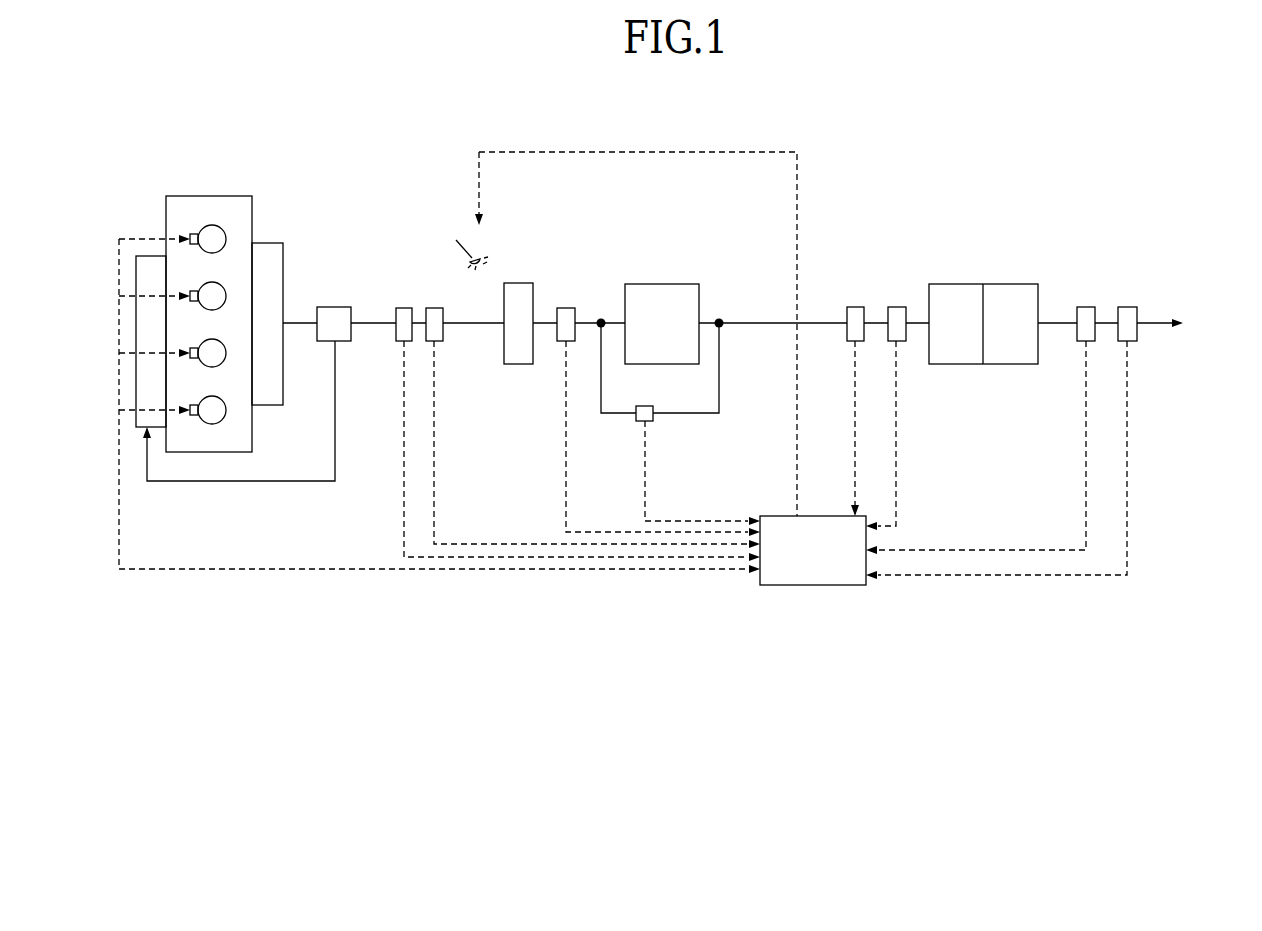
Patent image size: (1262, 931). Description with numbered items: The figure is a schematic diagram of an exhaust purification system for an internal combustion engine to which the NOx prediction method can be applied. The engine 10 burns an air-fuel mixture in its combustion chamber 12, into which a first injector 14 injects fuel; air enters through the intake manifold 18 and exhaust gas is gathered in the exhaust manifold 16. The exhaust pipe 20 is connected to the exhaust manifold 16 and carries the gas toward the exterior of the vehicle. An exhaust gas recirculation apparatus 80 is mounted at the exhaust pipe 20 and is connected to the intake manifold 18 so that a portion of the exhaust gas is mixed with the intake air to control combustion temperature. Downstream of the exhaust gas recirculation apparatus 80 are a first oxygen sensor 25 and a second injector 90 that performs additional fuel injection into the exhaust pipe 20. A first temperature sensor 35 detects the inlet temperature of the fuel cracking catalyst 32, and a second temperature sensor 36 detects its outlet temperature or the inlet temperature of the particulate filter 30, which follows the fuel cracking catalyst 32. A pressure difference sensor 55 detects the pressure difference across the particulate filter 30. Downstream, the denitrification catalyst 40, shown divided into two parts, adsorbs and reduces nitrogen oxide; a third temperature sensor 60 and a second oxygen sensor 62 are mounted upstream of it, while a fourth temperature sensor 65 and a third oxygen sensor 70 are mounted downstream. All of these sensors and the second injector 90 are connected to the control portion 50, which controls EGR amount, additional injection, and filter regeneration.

The engine 10 is at (266, 168).
The combustion chamber 12 is at (214, 225).
The first injector 14 is at (189, 236).
The exhaust manifold 16 is at (273, 253).
The intake manifold 18 is at (136, 256).
The exhaust pipe 20 is at (366, 322).
The first oxygen sensor 25 is at (404, 307).
The particulate filter 30 is at (682, 240).
The fuel cracking catalyst 32 is at (521, 283).
The first temperature sensor 35 is at (434, 307).
The second temperature sensor 36 is at (567, 307).
The denitrification (DE-NOx) catalyst 40 is at (1003, 293).
The control portion 50 is at (831, 586).
The pressure difference sensor 55 is at (641, 420).
The third temperature sensor 60 is at (855, 306).
The second oxygen sensor 62 is at (897, 306).
The fourth temperature sensor 65 is at (1088, 306).
The third oxygen sensor 70 is at (1130, 306).
The exhaust gas recirculation (EGR) apparatus 80 is at (333, 306).
The second injector 90 is at (456, 240).